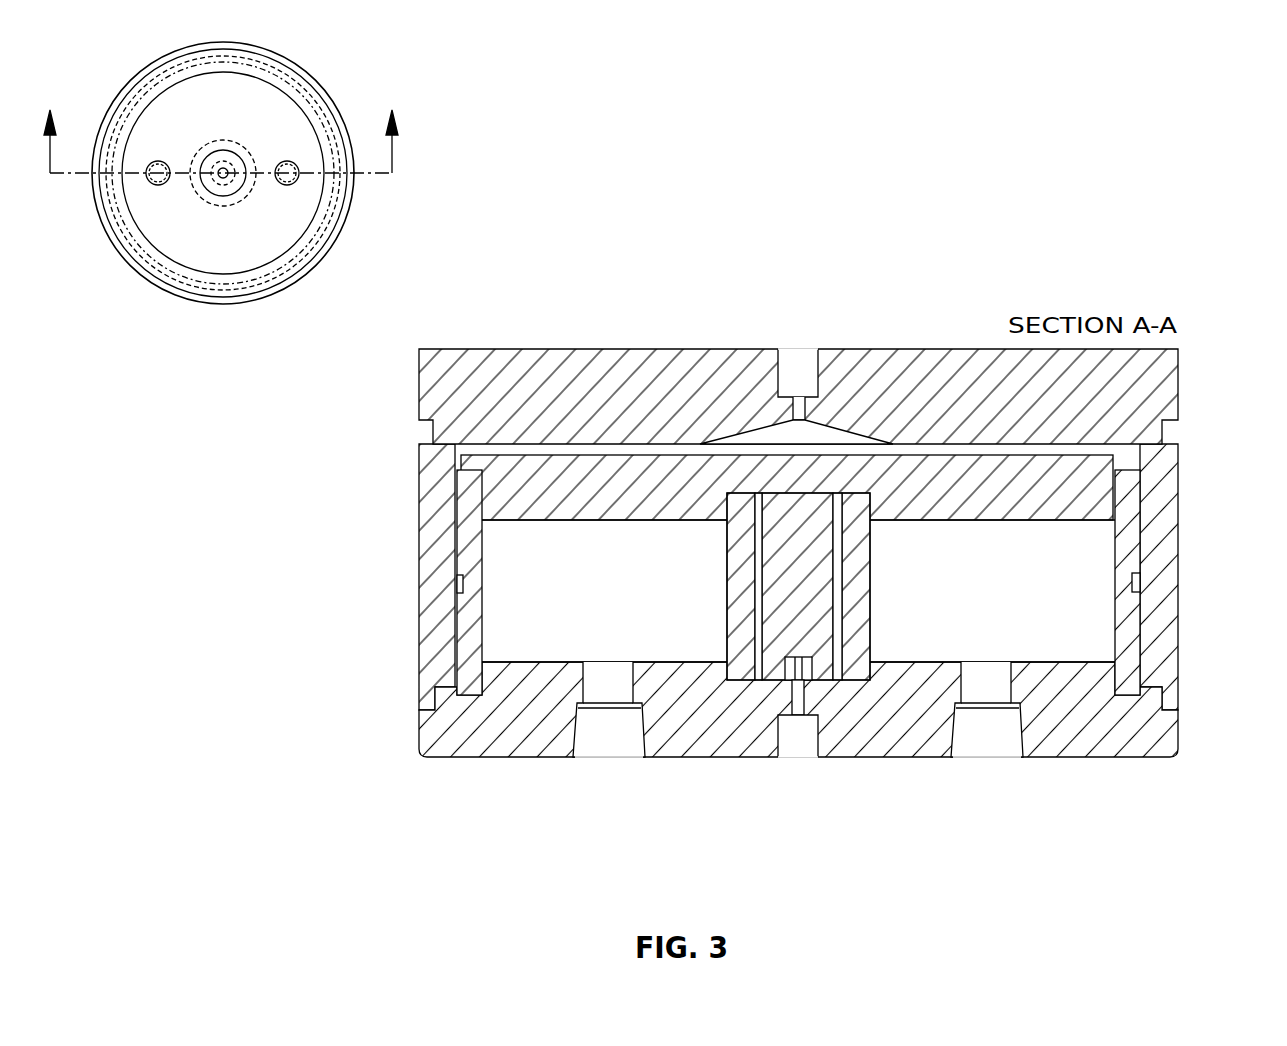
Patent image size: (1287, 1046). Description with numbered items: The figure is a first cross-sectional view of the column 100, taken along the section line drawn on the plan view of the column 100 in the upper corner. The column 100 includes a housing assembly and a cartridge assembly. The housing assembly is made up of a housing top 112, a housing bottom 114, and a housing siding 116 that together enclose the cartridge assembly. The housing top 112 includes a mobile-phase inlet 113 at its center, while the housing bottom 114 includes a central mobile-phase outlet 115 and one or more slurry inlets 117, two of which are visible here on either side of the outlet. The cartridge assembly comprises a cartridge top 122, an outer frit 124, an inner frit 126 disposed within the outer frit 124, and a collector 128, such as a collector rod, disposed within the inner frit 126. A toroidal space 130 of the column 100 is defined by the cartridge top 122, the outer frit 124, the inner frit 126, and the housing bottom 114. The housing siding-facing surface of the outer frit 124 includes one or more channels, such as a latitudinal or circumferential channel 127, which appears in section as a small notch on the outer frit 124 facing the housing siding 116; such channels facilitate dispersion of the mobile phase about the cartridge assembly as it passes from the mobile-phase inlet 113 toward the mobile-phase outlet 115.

The column 100 is at (380, 311).
The housing top 112 is at (447, 347).
The mobile-phase inlet 113 is at (819, 347).
The housing bottom 114 is at (1154, 760).
The mobile-phase outlet 115 is at (797, 760).
The housing siding 116 is at (1180, 611).
The slurry inlets 117 is at (597, 760).
The cartridge top 122 is at (921, 451).
The outer frit 124 is at (1132, 465).
The inner frit 126 is at (872, 589).
The latitudinal channel 127 is at (461, 586).
The collector 128 is at (835, 642).
The toroidal space 130 is at (515, 631).